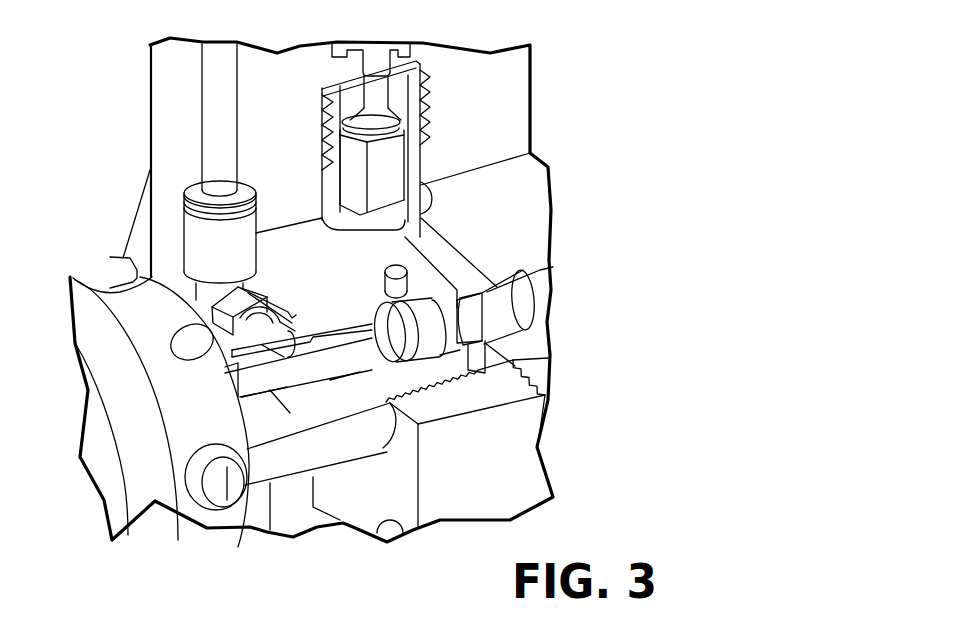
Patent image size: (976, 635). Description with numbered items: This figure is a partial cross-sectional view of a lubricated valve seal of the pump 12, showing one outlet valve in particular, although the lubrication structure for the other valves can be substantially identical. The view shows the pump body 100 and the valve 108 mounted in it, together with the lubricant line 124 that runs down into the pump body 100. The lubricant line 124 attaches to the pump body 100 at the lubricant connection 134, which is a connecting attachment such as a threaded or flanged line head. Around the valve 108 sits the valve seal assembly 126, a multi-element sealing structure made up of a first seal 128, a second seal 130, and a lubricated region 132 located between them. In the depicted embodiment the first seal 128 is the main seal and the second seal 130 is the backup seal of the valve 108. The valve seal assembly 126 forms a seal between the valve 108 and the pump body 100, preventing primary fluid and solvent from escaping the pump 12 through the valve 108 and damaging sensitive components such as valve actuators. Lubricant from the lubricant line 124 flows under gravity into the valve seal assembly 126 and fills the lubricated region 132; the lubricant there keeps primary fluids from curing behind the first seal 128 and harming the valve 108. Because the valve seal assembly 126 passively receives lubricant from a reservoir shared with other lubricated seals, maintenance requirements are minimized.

The pump 12 is at (665, 94).
The pump body 100 is at (518, 248).
The valve 108 is at (502, 318).
The lubricant line 124 is at (220, 105).
The valve seal assembly 126 is at (326, 388).
The first seal 128 is at (408, 343).
The second seal 130 is at (290, 357).
The lubricated region 132 is at (332, 358).
The lubricant connection 134 is at (195, 239).